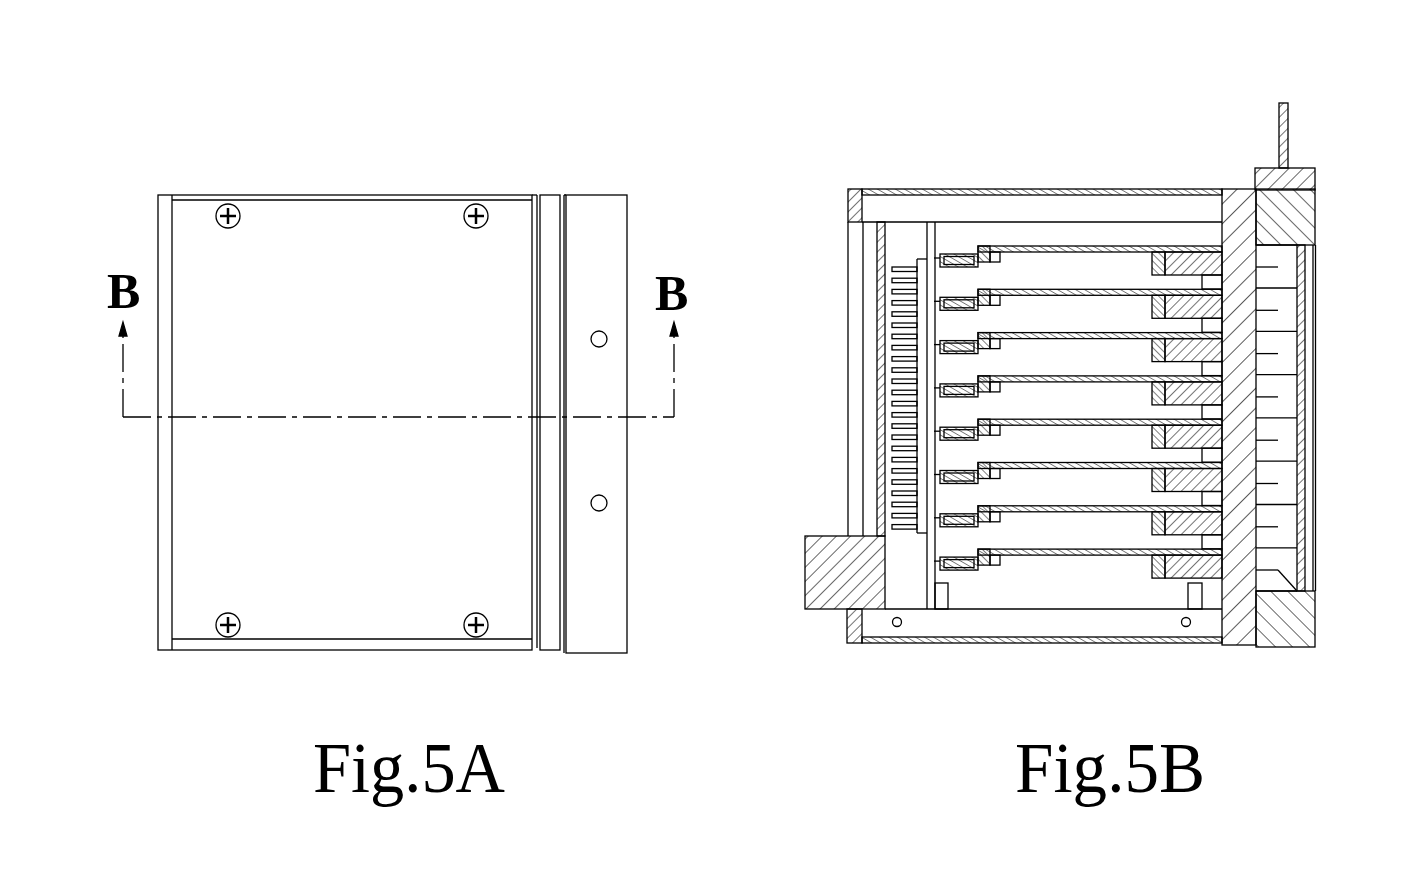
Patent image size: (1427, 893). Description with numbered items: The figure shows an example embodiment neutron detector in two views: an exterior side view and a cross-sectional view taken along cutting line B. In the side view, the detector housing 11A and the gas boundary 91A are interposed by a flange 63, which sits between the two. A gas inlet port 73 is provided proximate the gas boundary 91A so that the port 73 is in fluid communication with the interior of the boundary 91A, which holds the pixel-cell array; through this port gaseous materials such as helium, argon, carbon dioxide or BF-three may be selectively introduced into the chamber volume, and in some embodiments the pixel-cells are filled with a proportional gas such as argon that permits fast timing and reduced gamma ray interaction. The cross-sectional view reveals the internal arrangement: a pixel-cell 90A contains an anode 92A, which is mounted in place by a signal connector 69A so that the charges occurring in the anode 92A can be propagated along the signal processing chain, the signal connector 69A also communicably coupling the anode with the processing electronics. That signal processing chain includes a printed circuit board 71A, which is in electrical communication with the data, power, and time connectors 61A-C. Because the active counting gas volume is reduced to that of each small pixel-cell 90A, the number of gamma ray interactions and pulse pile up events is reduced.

In FIG. 5A, the detector housing 11A is at (280, 240).
In FIG. 5A, the flange 63 is at (550, 217).
In FIG. 5A, the gas boundary 91A is at (610, 215).
In FIG. 5B, the gas inlet port 73 is at (1287, 128).
In FIG. 5B, the pixel-cell 90A is at (1297, 550).
In FIG. 5B, the anode 92A is at (1313, 590).
In FIG. 5B, the data, power, and time connectors 61A-C is at (825, 582).
In FIG. 5B, the printed circuit board 71A is at (1082, 553).
In FIG. 5B, the signal connector 69A is at (1200, 568).